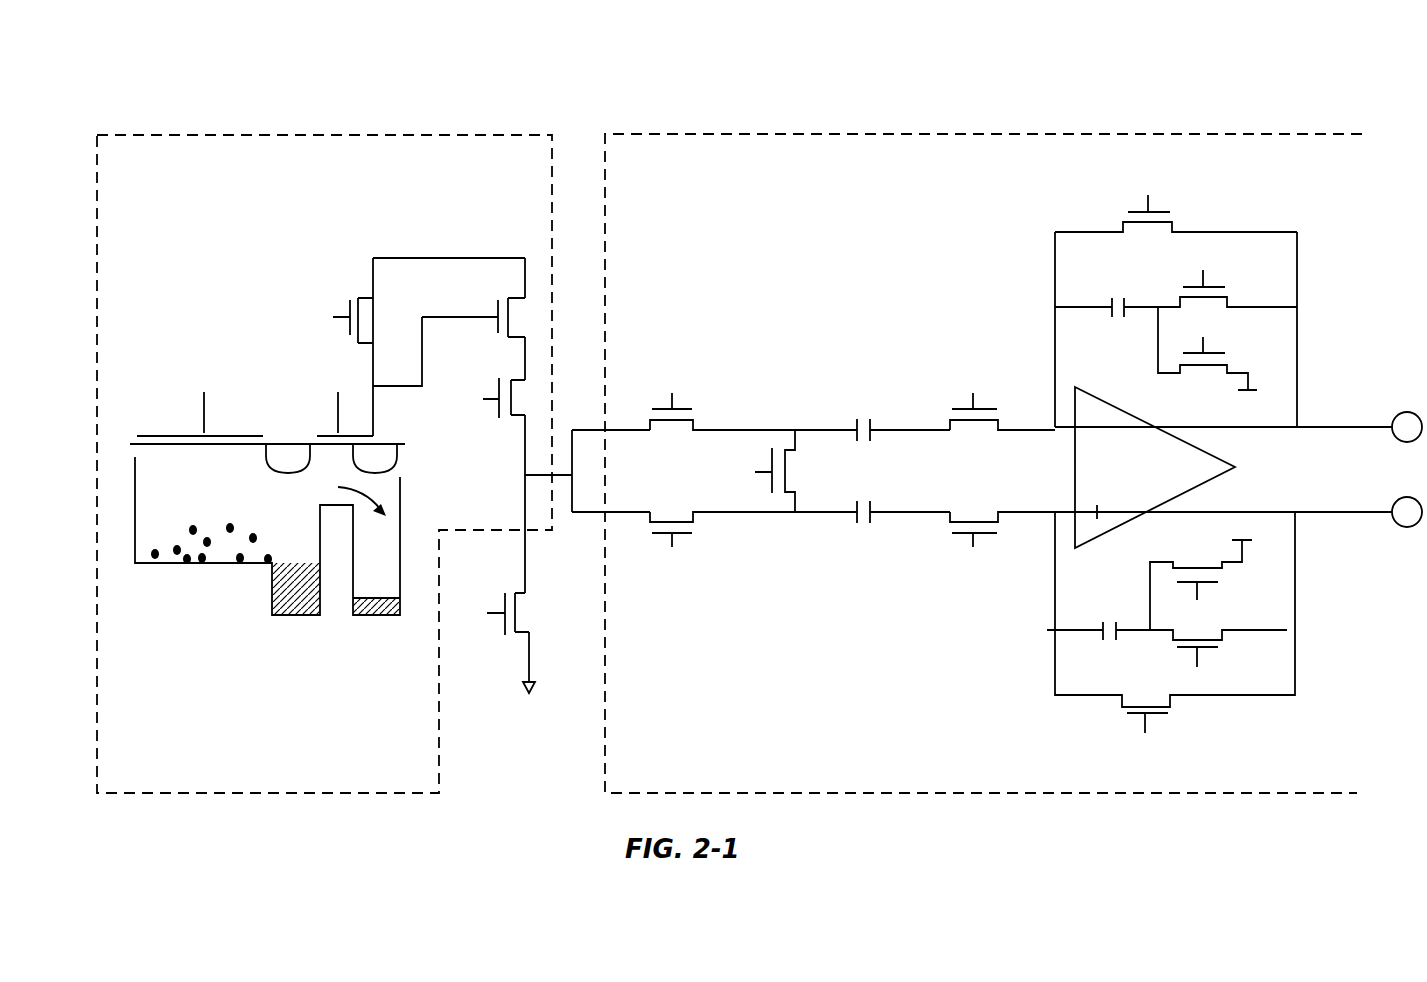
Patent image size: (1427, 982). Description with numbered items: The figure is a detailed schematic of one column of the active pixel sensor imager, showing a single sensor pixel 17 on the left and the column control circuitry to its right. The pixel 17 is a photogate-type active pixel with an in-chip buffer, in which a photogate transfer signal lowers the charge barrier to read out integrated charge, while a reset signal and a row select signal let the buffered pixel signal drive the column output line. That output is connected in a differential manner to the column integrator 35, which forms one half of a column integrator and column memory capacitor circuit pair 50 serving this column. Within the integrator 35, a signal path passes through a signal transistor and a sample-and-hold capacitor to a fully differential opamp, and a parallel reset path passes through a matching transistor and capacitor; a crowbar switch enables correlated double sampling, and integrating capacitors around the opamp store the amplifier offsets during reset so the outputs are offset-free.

The pixel 17 is at (398, 170).
The column integrator 35 is at (682, 170).
The column integrator and column memory capacitor circuit pair 50 is at (857, 109).